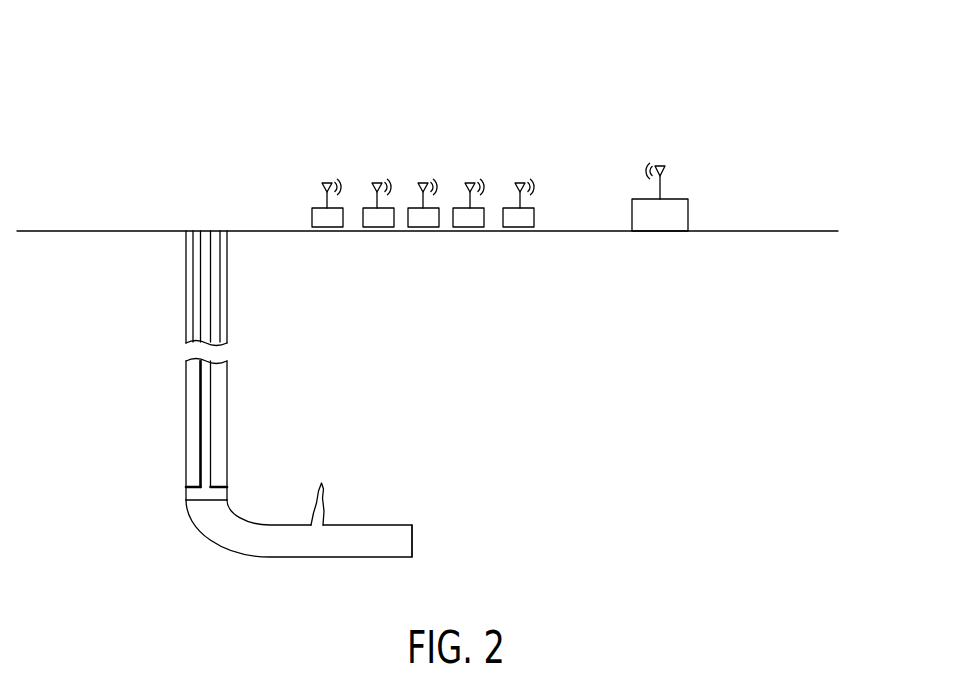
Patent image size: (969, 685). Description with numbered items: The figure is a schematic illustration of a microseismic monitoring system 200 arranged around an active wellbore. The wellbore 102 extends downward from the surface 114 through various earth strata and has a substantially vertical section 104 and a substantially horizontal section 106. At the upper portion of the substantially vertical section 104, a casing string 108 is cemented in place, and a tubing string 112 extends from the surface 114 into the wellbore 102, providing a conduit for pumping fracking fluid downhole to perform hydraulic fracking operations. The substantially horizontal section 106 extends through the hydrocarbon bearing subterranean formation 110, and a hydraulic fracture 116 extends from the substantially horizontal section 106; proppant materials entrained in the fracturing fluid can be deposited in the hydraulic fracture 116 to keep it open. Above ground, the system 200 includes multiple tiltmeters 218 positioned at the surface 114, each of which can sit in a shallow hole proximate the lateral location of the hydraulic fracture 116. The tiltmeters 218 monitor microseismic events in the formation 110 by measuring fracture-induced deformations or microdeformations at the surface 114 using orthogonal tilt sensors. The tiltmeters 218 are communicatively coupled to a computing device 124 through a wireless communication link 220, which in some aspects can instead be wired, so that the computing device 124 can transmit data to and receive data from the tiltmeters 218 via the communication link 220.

The microseismic monitoring system 200 is at (622, 69).
The surface 114 is at (103, 231).
The tiltmeters 218 is at (312, 207).
The wireless communication link 220 is at (324, 183).
The computing device 124 is at (677, 227).
The wellbore 102 is at (186, 297).
The casing string 108 is at (228, 258).
The tubing string 112 is at (207, 304).
The substantially vertical section 104 is at (186, 416).
The hydrocarbon bearing subterranean formation 110 is at (265, 455).
The hydraulic fracture 116 is at (319, 485).
The substantially horizontal section 106 is at (397, 523).